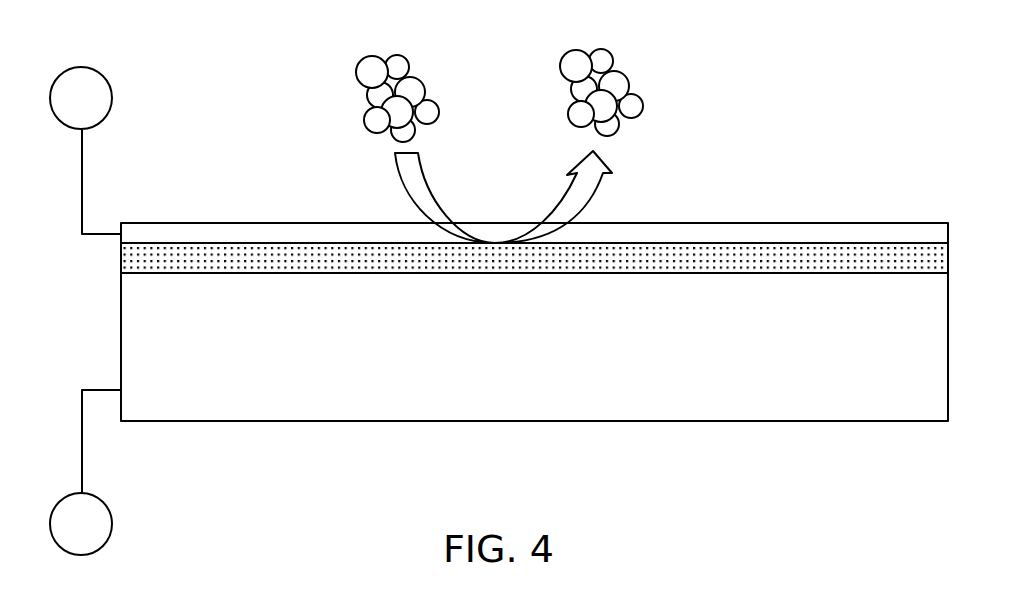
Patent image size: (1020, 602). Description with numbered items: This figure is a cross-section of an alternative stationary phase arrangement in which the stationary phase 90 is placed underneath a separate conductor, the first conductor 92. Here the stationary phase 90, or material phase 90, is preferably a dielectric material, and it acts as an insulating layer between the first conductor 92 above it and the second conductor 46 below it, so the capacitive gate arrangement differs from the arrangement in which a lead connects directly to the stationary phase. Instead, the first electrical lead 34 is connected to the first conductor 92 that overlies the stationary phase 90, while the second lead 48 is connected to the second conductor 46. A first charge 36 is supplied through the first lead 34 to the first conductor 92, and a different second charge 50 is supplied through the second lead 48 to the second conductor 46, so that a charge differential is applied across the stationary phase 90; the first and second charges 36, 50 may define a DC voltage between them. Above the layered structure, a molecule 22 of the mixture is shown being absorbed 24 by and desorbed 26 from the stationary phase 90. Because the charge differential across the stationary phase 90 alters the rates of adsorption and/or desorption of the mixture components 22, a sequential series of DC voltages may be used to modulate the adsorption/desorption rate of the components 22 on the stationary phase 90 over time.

The molecule 22 is at (371, 55).
The absorption 24 is at (407, 191).
The desorption 26 is at (594, 191).
The first electrical lead 34 is at (82, 171).
The first charge 36 is at (113, 97).
The second conductor 46 is at (496, 421).
The second lead 48 is at (82, 465).
The second charge 50 is at (113, 521).
The stationary phase 90 is at (121, 260).
The first conductor 92 is at (751, 223).